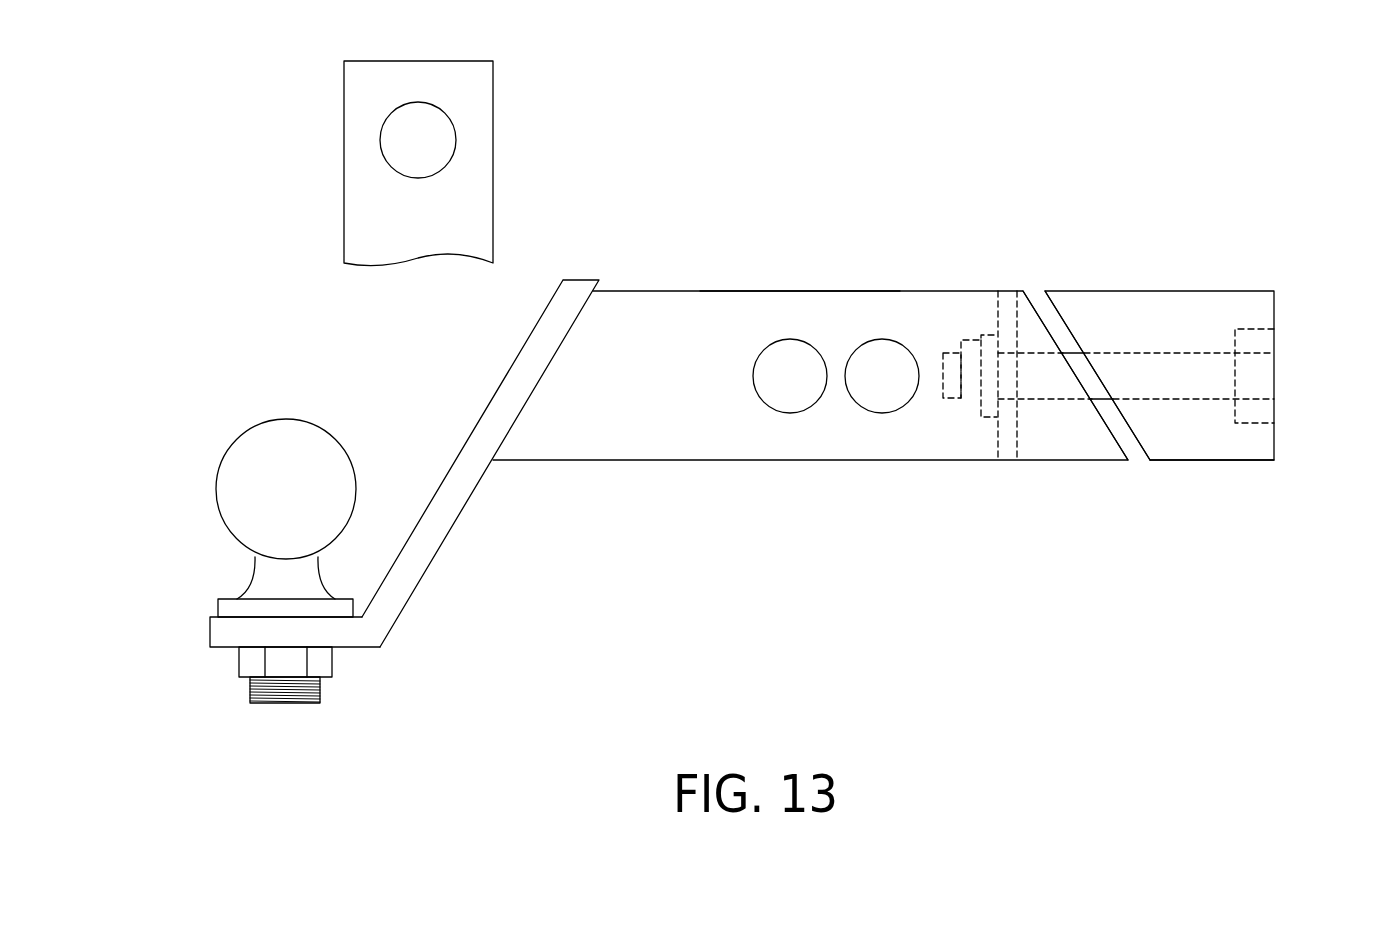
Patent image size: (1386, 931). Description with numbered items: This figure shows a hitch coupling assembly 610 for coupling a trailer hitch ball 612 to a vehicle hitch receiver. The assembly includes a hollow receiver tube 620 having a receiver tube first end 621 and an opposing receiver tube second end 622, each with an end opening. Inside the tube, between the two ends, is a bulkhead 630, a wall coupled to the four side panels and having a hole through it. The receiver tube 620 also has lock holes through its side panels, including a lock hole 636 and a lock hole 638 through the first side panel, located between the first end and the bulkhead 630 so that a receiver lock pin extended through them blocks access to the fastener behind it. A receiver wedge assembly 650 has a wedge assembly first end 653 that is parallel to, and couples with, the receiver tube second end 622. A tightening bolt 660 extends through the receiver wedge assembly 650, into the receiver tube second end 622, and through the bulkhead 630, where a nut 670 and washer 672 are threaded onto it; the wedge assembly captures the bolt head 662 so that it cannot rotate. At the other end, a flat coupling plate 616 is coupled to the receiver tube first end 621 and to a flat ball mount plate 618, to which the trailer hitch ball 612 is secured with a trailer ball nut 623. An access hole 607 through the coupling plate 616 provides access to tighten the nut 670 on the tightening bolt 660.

The access hole 607 is at (435, 138).
The hitch coupling assembly 610 is at (731, 250).
The trailer hitch ball 612 is at (287, 437).
The coupling plate 616 is at (442, 354).
The ball mount plate 618 is at (233, 635).
The receiver tube 620 is at (781, 313).
The receiver tube first end 621 is at (553, 408).
The receiver tube second end 622 is at (1073, 440).
The trailer ball nut 623 is at (322, 661).
The bulkhead 630 is at (1005, 307).
The lock hole 636 is at (783, 390).
The lock hole 638 is at (878, 390).
The receiver wedge assembly 650 is at (1178, 288).
The wedge assembly first end 653 is at (1063, 318).
The tightening bolt 660 is at (1152, 378).
The bolt head 662 is at (1247, 371).
The nut 670 is at (971, 400).
The washer 672 is at (993, 405).